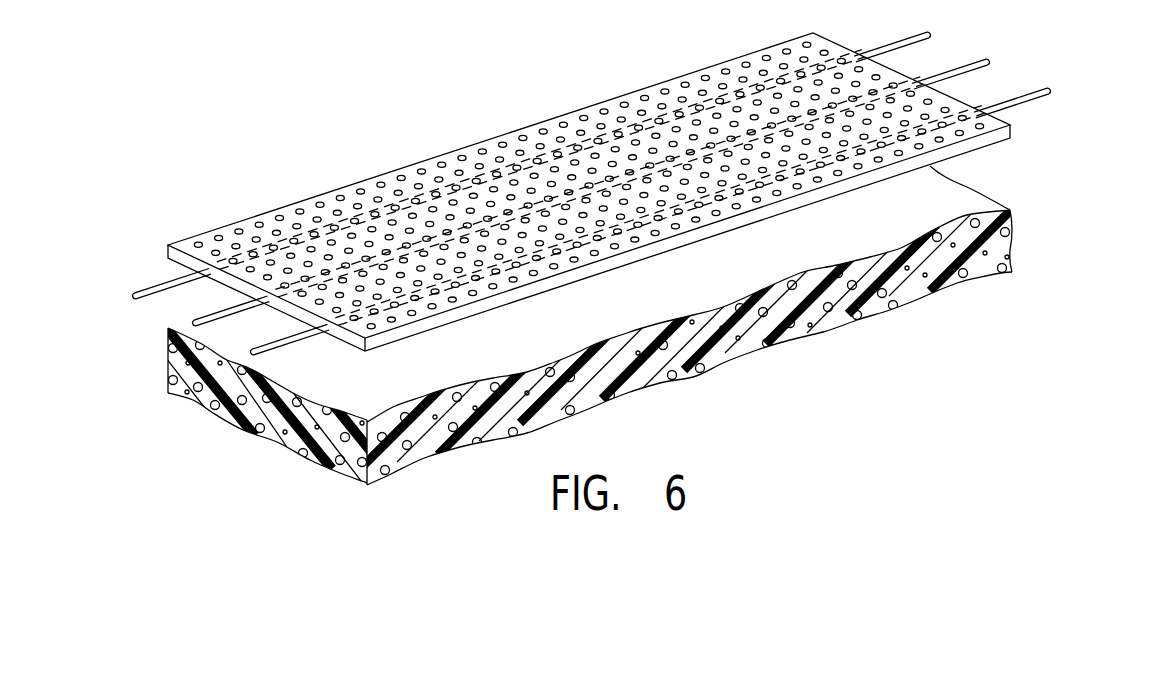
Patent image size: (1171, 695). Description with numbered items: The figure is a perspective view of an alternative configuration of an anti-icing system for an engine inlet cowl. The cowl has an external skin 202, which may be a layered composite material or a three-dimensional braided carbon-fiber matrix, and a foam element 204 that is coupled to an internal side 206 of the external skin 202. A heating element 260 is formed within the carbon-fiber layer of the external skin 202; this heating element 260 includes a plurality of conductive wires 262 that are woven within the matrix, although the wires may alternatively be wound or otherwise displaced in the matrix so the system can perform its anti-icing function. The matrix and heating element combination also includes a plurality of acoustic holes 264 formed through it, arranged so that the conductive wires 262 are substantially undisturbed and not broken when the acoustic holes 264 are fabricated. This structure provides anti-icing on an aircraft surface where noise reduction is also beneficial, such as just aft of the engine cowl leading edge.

The external skin 202 is at (190, 460).
The foam element 204 is at (1015, 238).
The internal side 206 is at (968, 154).
The heating element 260 is at (1070, 100).
The conductive wires 262 is at (162, 284).
The acoustic holes 264 is at (786, 50).